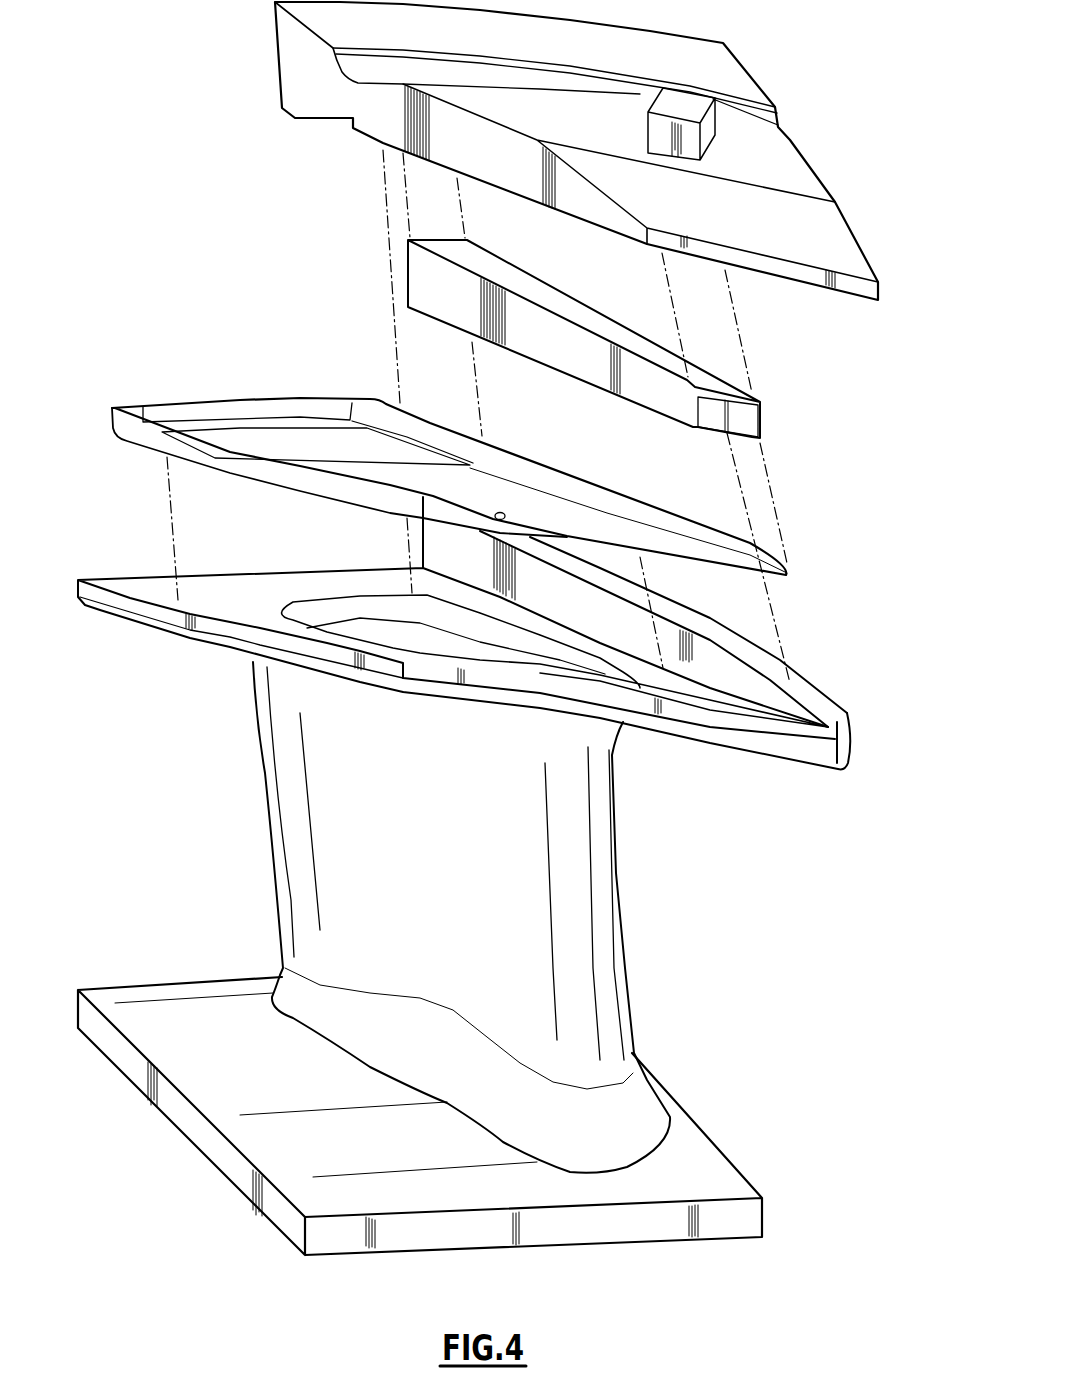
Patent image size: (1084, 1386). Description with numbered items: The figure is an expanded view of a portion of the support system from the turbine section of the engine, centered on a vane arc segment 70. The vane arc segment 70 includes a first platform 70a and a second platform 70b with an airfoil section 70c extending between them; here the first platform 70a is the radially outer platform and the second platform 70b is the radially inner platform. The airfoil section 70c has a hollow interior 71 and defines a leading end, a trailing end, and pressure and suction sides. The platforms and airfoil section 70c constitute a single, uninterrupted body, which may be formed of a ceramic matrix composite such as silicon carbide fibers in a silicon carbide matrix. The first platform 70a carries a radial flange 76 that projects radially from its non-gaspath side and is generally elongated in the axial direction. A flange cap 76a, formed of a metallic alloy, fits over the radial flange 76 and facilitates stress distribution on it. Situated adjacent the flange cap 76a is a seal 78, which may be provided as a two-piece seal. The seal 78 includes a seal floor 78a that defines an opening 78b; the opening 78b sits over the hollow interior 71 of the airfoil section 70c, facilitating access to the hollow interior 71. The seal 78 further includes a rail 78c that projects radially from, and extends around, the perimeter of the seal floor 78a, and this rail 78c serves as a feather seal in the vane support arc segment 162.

The vane support arc segment 162 is at (848, 223).
The flange cap 76a is at (762, 420).
The seal 78 is at (197, 398).
The rail 78c is at (273, 412).
The seal floor 78a is at (460, 493).
The opening 78b is at (504, 519).
The first platform 70a is at (160, 583).
The hollow interior 71 is at (381, 639).
The radial flange 76 is at (696, 620).
The vane arc segment 70 is at (606, 928).
The airfoil section 70c is at (583, 842).
The second platform 70b is at (150, 983).